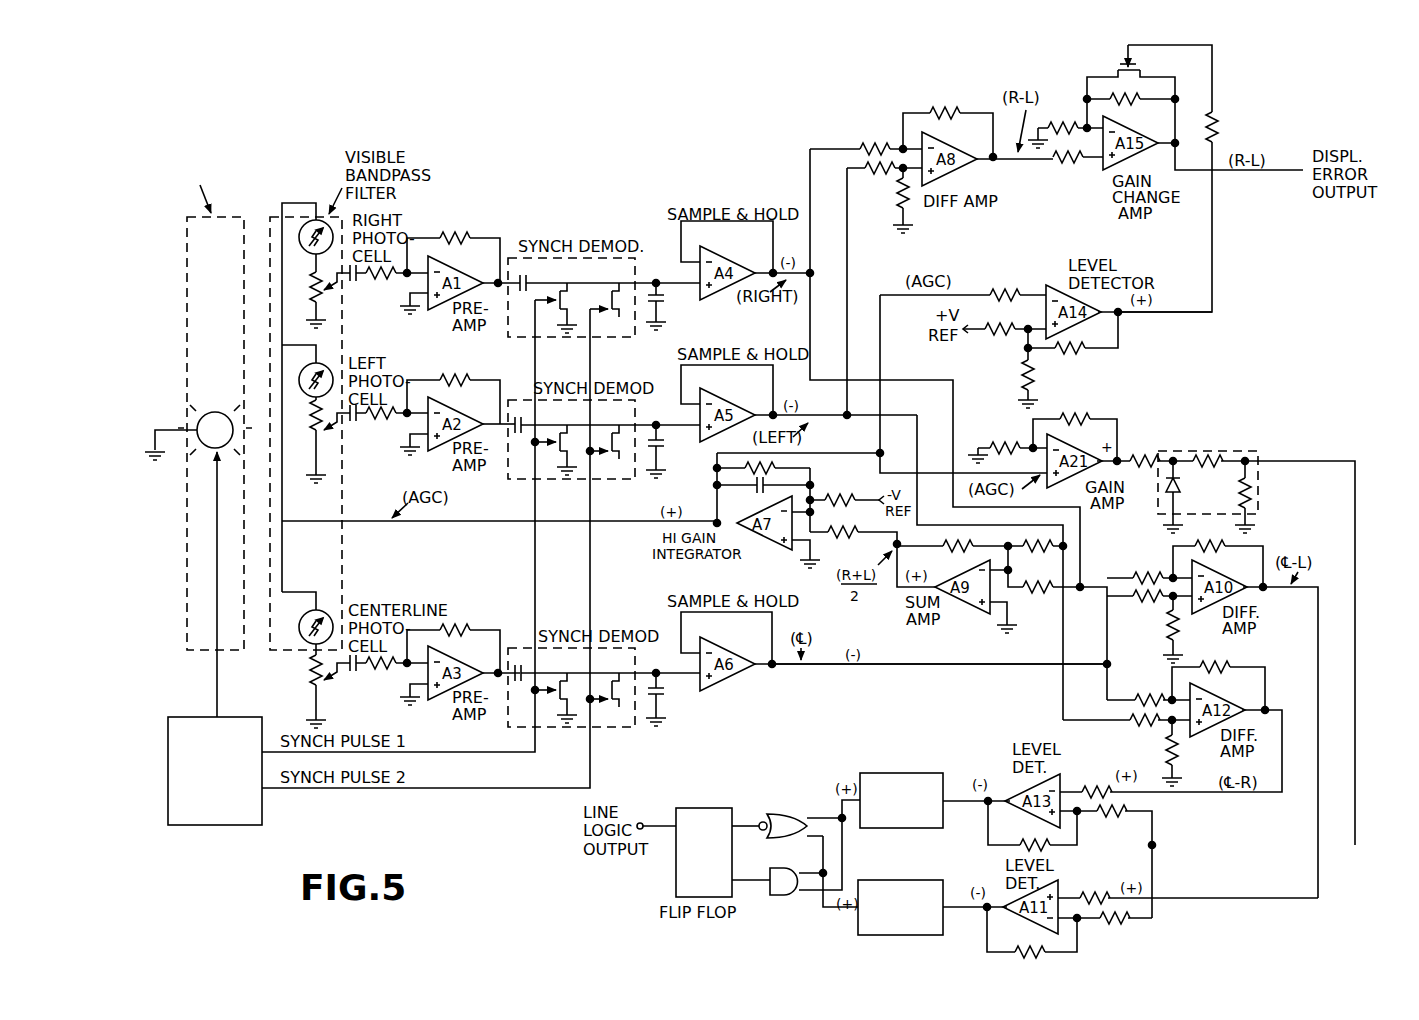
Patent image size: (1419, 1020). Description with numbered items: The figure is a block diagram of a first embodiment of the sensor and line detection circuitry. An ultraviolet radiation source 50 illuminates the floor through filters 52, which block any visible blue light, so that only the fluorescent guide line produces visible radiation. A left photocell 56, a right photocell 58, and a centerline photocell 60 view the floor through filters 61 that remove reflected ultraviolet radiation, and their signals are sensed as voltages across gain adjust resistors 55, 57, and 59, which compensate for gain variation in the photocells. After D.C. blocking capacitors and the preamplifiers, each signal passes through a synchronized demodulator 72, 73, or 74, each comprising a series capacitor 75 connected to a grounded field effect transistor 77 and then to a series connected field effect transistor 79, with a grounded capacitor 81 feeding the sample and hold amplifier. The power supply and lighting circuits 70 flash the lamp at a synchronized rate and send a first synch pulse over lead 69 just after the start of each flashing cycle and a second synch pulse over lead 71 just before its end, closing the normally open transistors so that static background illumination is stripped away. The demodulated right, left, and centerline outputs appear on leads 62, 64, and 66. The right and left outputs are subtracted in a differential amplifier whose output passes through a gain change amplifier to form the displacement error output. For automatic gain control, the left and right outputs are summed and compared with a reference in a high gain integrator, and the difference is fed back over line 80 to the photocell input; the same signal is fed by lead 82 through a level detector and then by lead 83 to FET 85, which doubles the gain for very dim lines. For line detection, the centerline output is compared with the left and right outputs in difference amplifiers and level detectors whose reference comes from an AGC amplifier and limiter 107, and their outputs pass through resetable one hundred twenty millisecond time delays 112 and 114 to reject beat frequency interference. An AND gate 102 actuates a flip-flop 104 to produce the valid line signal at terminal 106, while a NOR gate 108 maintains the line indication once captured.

The radiation source 50 is at (195, 420).
The filters 52 is at (187, 220).
The gain adjust resistor 55 is at (317, 292).
The left photocell 56 is at (325, 363).
The gain adjust resistor 57 is at (317, 438).
The right photocell 58 is at (314, 256).
The gain adjust resistor 59 is at (318, 675).
The centerline photocell 60 is at (322, 614).
The filters 61 is at (282, 212).
The lead 62 is at (810, 176).
The lead 64 is at (824, 420).
The lead 66 is at (896, 668).
The lead 69 is at (466, 755).
The power supply and lighting circuits 70 is at (186, 716).
The lead 71 is at (466, 792).
The synchronized demodulator 72 is at (636, 278).
The synchronized demodulator 73 is at (637, 418).
The synchronized demodulator 74 is at (637, 666).
The series capacitor 75 is at (530, 282).
The grounded field effect transistor 77 is at (563, 305).
The series connected field effect transistor 79 is at (615, 311).
The line 80 is at (474, 523).
The grounded capacitor 81 is at (662, 312).
The lead 82 is at (883, 368).
The lead 83 is at (1214, 252).
The FET 85 is at (1138, 70).
The AND gate 102 is at (786, 898).
The flip-flop 104 is at (673, 865).
The terminal 106 is at (660, 824).
The limiter 107 is at (1250, 452).
The NOR gate 108 is at (770, 813).
The resetable 120 ms time delay 112 is at (884, 877).
The resetable 120 ms time delay 114 is at (901, 771).